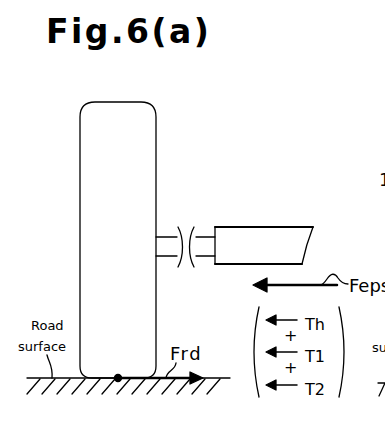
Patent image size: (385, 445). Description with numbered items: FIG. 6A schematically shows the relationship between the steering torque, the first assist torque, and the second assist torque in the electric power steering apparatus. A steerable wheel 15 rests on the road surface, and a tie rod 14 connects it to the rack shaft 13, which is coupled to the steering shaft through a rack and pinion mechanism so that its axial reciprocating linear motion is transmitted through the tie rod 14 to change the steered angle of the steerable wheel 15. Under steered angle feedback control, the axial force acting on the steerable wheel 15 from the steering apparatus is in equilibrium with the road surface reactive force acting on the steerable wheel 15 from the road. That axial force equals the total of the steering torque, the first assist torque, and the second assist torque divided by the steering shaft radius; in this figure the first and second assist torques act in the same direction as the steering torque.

The rack shaft 13 is at (252, 227).
The tie rod 14 is at (211, 234).
The steerable wheel 15 is at (80, 175).